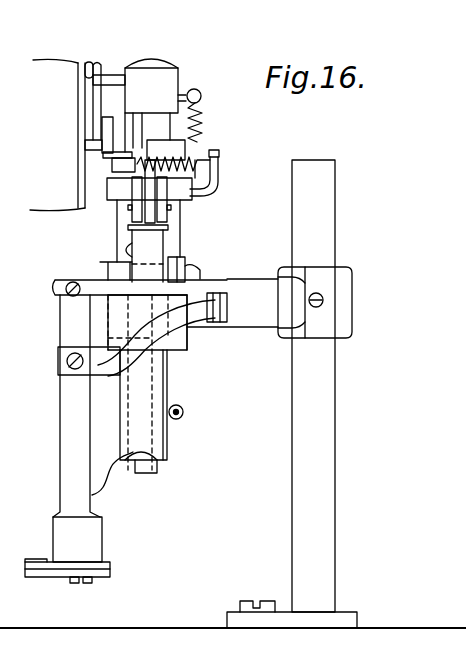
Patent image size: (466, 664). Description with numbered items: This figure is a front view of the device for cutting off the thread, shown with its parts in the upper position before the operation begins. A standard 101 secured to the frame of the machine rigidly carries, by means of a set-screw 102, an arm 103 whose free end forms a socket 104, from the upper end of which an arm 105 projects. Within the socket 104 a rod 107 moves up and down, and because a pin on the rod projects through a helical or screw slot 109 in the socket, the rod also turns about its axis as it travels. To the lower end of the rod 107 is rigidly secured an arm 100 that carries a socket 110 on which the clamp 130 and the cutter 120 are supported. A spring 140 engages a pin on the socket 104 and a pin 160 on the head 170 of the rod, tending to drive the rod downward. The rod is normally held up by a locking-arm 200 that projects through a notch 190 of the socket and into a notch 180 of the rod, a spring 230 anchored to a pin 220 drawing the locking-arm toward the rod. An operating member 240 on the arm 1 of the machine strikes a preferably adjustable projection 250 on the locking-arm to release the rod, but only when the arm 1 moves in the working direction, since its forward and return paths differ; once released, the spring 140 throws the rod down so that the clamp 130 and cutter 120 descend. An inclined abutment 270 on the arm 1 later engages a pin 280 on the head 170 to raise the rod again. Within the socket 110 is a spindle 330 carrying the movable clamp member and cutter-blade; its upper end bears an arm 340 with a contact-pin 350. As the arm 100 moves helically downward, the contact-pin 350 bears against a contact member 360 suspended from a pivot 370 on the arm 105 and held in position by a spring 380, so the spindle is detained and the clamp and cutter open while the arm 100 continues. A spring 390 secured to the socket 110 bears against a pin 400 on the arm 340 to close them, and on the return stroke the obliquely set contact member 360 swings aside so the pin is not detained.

The arm 1 is at (57, 134).
The arm 100 is at (105, 468).
The standard 101 is at (333, 441).
The set-screw 102 is at (324, 300).
The arm 103 is at (258, 316).
The socket 104 is at (172, 333).
The arm 105 is at (163, 193).
The rod 107 is at (165, 365).
The helical or screw slot 109 is at (122, 247).
The socket 110 is at (68, 439).
The cutter 120 is at (37, 578).
The clamp 130 is at (37, 562).
The spring 140 is at (205, 127).
The pin 160 is at (203, 99).
The head 170 is at (165, 72).
The notch 180 is at (139, 135).
The notch 190 is at (143, 155).
The locking-arm 200 is at (110, 176).
The pin 220 is at (192, 192).
The spring 230 is at (192, 170).
The operating member 240 is at (100, 142).
The projection 250 is at (113, 158).
The inclined abutment 270 is at (95, 105).
The pin 280 is at (112, 75).
The spindle 330 is at (67, 281).
The arm 340 is at (140, 290).
The contact-pin 350 is at (181, 264).
The contact member 360 is at (132, 265).
The pivot 370 is at (172, 210).
The spring 380 is at (216, 172).
The spring 390 is at (107, 378).
The pin 400 is at (228, 308).